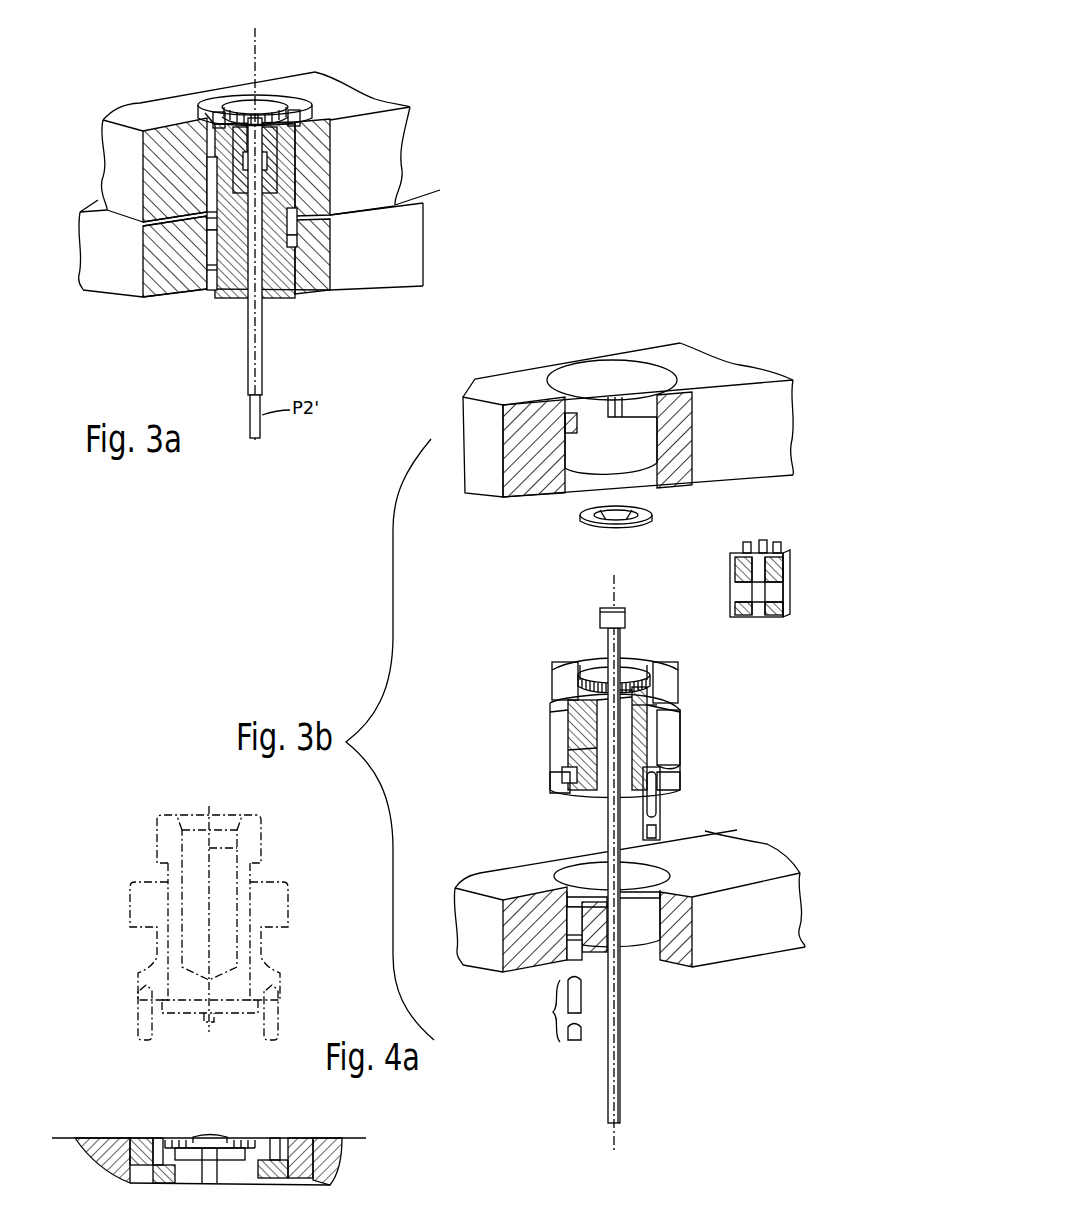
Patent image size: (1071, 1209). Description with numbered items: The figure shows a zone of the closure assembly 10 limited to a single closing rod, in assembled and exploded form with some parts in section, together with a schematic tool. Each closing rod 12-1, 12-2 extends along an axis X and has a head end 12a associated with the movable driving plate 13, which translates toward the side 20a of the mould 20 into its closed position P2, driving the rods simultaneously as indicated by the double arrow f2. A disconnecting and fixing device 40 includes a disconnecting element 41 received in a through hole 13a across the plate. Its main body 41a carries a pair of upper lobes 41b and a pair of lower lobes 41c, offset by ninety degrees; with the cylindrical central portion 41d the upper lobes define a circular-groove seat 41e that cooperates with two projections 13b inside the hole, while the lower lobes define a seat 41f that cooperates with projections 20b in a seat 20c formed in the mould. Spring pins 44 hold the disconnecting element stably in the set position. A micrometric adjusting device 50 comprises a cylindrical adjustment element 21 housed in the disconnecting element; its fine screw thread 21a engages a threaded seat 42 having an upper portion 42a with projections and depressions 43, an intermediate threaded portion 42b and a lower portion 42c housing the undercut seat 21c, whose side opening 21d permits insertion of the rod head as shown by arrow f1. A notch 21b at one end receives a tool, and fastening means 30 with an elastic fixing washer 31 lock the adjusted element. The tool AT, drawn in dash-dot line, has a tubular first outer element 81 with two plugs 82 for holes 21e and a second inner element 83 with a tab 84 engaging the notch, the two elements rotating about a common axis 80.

In FIG. 3A, the closure assembly 10 is at (165, 322).
In FIG. 3B, the closure assembly 10 is at (494, 1021).
In FIG. 3A, the closing rod 12-1 is at (260, 345).
In FIG. 3B, the closing rod 12-1 is at (607, 643).
In FIG. 3A, the closing rod 12-2 is at (321, 404).
In FIG. 3A, the head end 12a is at (300, 212).
In FIG. 3B, the head end 12a is at (600, 614).
In FIG. 3A, the movable driving plate 13 is at (368, 100).
In FIG. 3B, the movable driving plate 13 is at (493, 385).
In FIG. 4A, the movable driving plate 13 is at (95, 1140).
In FIG. 3B, the through hole 13a is at (625, 385).
In FIG. 3A, the projections 13b is at (210, 120).
In FIG. 3B, the projections 13b is at (585, 413).
In FIG. 3A, the mould 20 is at (120, 266).
In FIG. 3B, the mould 20 is at (478, 927).
In FIG. 3A, the side of the mould 20a is at (96, 208).
In FIG. 3B, the side of the mould 20a is at (735, 852).
In FIG. 3A, the projections 20b is at (148, 235).
In FIG. 3B, the projections 20b is at (560, 875).
In FIG. 3B, the seat 20c is at (587, 848).
In FIG. 3A, the adjustment element 21 is at (285, 141).
In FIG. 3B, the adjustment element 21 is at (727, 562).
In FIG. 4A, the adjustment element 21 is at (130, 1142).
In FIG. 3B, the screw thread 21a is at (790, 573).
In FIG. 3B, the notch 21b is at (765, 541).
In FIG. 4A, the notch 21b is at (211, 1137).
In FIG. 3B, the undercut seat 21c is at (786, 600).
In FIG. 3B, the side opening 21d is at (740, 600).
In FIG. 4A, the holes 21e is at (151, 1140).
In FIG. 3A, the fastening means 30 is at (278, 90).
In FIG. 3B, the fastening means 30 is at (566, 544).
In FIG. 3B, the elastic fixing washer 31 is at (590, 516).
In FIG. 3A, the disconnecting and fixing device 40 is at (313, 93).
In FIG. 3B, the disconnecting and fixing device 40 is at (788, 777).
In FIG. 4A, the disconnecting and fixing device 40 is at (284, 1134).
In FIG. 3A, the disconnecting element 41 is at (330, 182).
In FIG. 3B, the disconnecting element 41 is at (550, 739).
In FIG. 4A, the disconnecting element 41 is at (300, 1141).
In FIG. 3B, the main body 41a is at (580, 747).
In FIG. 3A, the upper lobes 41b is at (205, 113).
In FIG. 3B, the upper lobes 41b is at (553, 666).
In FIG. 3A, the lower lobes 41c is at (297, 250).
In FIG. 3B, the lower lobes 41c is at (557, 787).
In FIG. 3B, the cylindrical central portion 41d is at (672, 736).
In FIG. 3B, the seat 41e is at (553, 710).
In FIG. 3B, the seat 41f is at (558, 772).
In FIG. 3B, the threaded seat 42 is at (658, 655).
In FIG. 3B, the first upper portion 42a is at (630, 685).
In FIG. 3B, the second threaded portion 42b is at (622, 687).
In FIG. 3B, the third lower portion 42c is at (647, 705).
In FIG. 3A, the projections and depressions 43 is at (265, 100).
In FIG. 3B, the projections and depressions 43 is at (601, 660).
In FIG. 3A, the spring pins 44 is at (216, 191).
In FIG. 3B, the spring pins 44 is at (660, 797).
In FIG. 3A, the micrometric adjusting device 50 is at (220, 76).
In FIG. 3B, the micrometric adjusting device 50 is at (681, 569).
In FIG. 4A, the micrometric adjusting device 50 is at (223, 1133).
In FIG. 4A, the common axis 80 is at (247, 846).
In FIG. 4A, the first outer element 81 is at (132, 906).
In FIG. 4A, the plugs 82 is at (138, 1033).
In FIG. 4A, the second inner element 83 is at (167, 876).
In FIG. 4A, the tab 84 is at (210, 1023).
In FIG. 4A, the tool AT is at (123, 829).
In FIG. 3A, the axis X is at (252, 43).
In FIG. 3B, the axis X is at (612, 592).
In FIG. 3B, the arrow f1 is at (706, 632).
In FIG. 3A, the double arrow f2 is at (452, 62).
In FIG. 3A, the closed position P2 is at (405, 130).